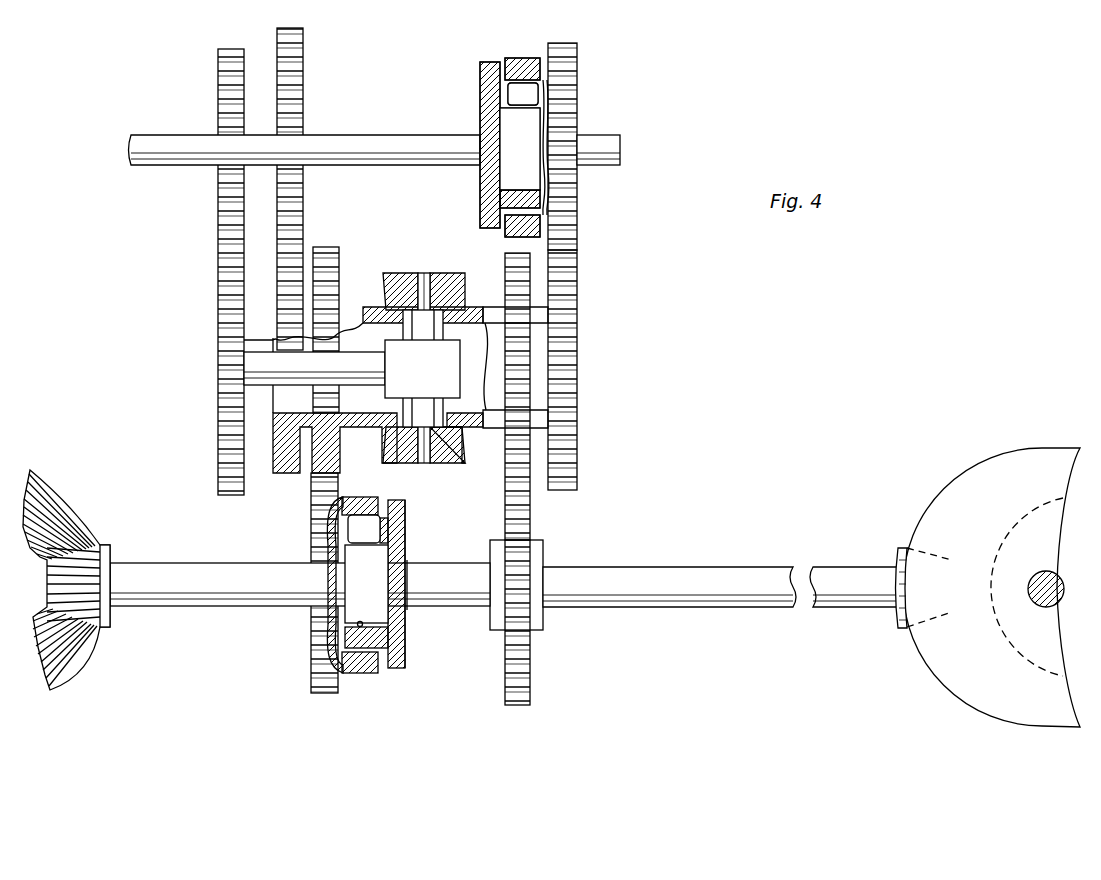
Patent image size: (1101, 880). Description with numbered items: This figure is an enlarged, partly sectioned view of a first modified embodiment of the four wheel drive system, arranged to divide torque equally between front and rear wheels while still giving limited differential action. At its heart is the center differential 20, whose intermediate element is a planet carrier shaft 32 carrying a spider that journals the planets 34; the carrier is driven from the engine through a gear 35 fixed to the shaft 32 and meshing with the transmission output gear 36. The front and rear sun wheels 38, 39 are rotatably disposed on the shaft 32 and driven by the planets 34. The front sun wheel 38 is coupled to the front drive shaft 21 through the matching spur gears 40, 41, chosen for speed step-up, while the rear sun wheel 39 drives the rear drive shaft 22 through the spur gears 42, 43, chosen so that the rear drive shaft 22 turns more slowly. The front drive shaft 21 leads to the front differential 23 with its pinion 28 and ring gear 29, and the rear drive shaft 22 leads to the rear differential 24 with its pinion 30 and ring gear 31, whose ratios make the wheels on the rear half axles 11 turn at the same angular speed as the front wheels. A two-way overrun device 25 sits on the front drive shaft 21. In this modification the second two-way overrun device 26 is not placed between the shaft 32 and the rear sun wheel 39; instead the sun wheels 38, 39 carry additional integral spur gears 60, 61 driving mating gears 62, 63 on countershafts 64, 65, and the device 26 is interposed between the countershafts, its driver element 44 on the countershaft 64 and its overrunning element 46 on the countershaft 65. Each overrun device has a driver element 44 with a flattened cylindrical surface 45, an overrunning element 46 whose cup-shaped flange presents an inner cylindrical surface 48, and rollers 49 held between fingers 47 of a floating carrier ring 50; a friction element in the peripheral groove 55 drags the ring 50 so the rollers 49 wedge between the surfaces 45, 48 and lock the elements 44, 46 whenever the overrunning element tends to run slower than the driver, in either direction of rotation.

The rear half axles 11 is at (1036, 578).
The center differential 20 is at (433, 347).
The front drive shaft 21 is at (158, 563).
The rear drive shaft 22 is at (790, 575).
The front differential 23 is at (77, 580).
The rear differential 24 is at (978, 578).
The two-way overrun device 25 is at (440, 381).
The second two-way overrun device 26 is at (554, 37).
The front differential pinion 28 is at (100, 623).
The front differential ring gear 29 is at (85, 655).
The rear differential pinion 30 is at (892, 576).
The rear differential ring gear 31 is at (932, 515).
The planet carrier shaft 32 is at (262, 352).
The planets 34 is at (440, 279).
The gear 35 is at (218, 378).
The transmission output gear 36 is at (228, 105).
The front sun wheel 38 is at (386, 283).
The rear sun wheel 39 is at (483, 280).
The front spur gear 40 is at (318, 470).
The front spur gear 41 is at (316, 492).
The rear spur gear 42 is at (505, 456).
The rear spur gear 43 is at (528, 500).
The driver element 44 is at (385, 558).
The cylindrical surface 45 is at (365, 622).
The overrunning element 46 is at (527, 60).
The fingers 47 is at (328, 645).
The inner cylindrical surface 48 is at (372, 672).
The rollers 49 is at (362, 518).
The carrier ring 50 is at (406, 515).
The peripheral groove 55 is at (398, 506).
The integral spur gear 60 is at (276, 288).
The integral spur gear 61 is at (577, 273).
The mating gear 62 is at (305, 228).
The mating gear 63 is at (568, 222).
The countershaft 64 is at (345, 136).
The countershaft 65 is at (598, 137).